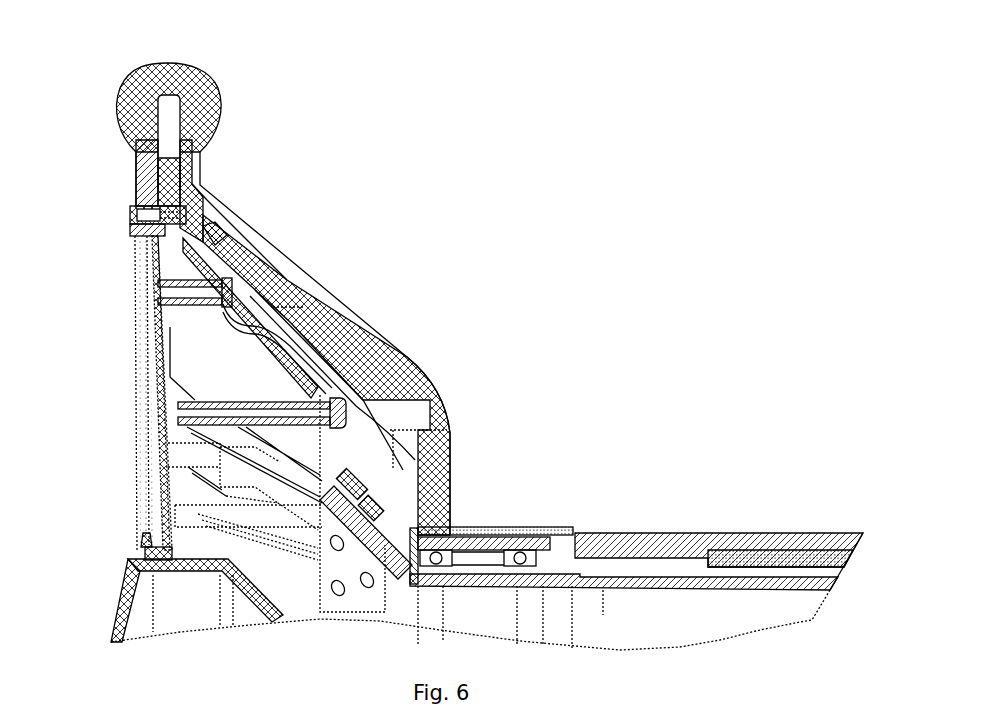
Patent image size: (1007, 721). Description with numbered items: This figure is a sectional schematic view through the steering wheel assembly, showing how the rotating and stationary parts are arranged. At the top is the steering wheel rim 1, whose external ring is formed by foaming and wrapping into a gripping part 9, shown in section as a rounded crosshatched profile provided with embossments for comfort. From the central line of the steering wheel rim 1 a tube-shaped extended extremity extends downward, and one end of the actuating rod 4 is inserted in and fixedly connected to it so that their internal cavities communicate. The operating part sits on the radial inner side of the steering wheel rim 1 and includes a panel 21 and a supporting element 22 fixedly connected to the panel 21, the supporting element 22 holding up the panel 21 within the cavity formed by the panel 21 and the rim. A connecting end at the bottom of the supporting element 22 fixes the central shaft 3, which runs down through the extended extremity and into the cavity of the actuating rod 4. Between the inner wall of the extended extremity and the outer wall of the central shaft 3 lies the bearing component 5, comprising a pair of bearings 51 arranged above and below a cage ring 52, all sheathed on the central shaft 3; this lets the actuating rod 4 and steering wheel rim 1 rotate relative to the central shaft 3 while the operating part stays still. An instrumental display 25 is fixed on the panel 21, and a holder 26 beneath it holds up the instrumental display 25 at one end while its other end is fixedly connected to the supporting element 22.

The steering wheel rim 1 is at (300, 272).
The central shaft 3 is at (728, 556).
The actuating rod 4 is at (630, 533).
The bearing component 5 is at (648, 413).
The bearings 51 is at (507, 527).
The cage ring 52 is at (537, 528).
The gripping part 9 is at (200, 68).
The panel 21 is at (134, 212).
The supporting element 22 is at (370, 356).
The instrumental display 25 is at (150, 363).
The holder 26 is at (338, 325).